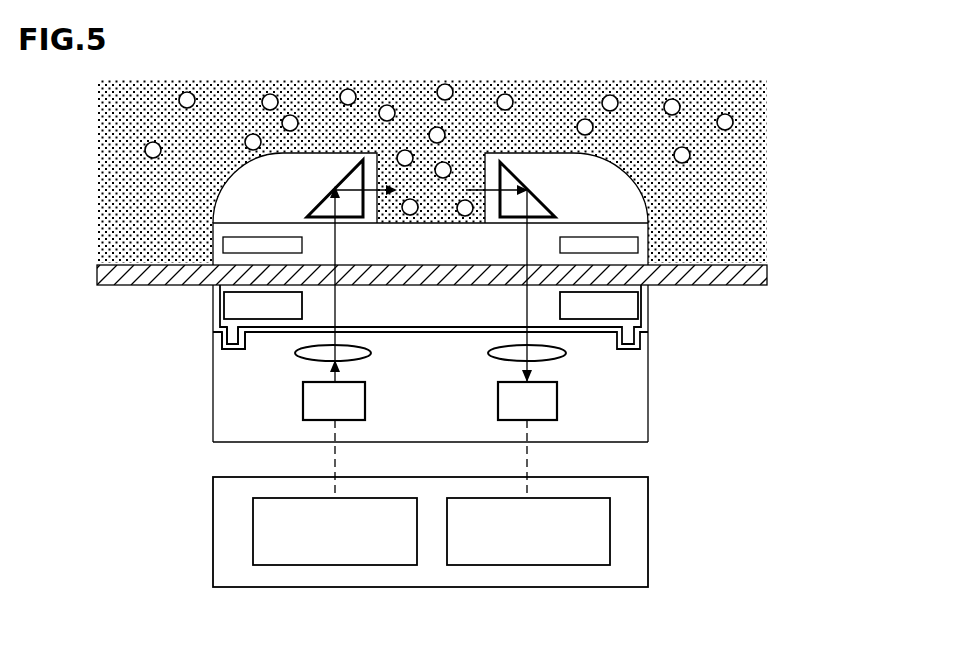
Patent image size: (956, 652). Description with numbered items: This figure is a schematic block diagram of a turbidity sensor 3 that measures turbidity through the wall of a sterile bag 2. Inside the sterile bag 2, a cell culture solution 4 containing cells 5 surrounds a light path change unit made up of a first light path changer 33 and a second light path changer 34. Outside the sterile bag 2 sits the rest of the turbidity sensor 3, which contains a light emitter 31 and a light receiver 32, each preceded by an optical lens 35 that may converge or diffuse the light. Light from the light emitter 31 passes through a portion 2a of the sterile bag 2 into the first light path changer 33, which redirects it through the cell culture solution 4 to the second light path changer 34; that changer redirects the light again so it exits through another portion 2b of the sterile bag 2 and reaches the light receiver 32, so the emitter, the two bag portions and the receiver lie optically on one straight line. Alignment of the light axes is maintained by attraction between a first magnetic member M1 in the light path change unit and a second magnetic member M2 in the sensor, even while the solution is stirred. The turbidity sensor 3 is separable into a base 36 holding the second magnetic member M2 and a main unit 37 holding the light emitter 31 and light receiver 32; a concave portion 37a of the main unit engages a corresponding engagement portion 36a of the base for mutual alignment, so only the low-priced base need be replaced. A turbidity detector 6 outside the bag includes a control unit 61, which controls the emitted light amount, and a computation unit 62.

The sterile bag 2 is at (122, 287).
The portion of the sterile bag 2a is at (338, 290).
The another portion of the sterile bag 2b is at (523, 290).
The turbidity sensor 3 is at (211, 403).
The cell culture solution 4 is at (745, 100).
The cell 5 is at (734, 121).
The turbidity detector 6 is at (213, 503).
The light emitter 31 is at (303, 402).
The light receiver 32 is at (557, 400).
The first light path changer 33 is at (348, 170).
The second light path changer 34 is at (515, 170).
The optical lens 35 is at (652, 208).
The base 36 is at (648, 315).
The engaging portion of first housing 36a is at (234, 336).
The main unit 37 is at (648, 386).
The concave portion 37a is at (232, 357).
The control unit 61 is at (253, 537).
The computation unit 62 is at (610, 540).
The first magnetic member M1 is at (640, 246).
The second magnetic member M2 is at (640, 300).